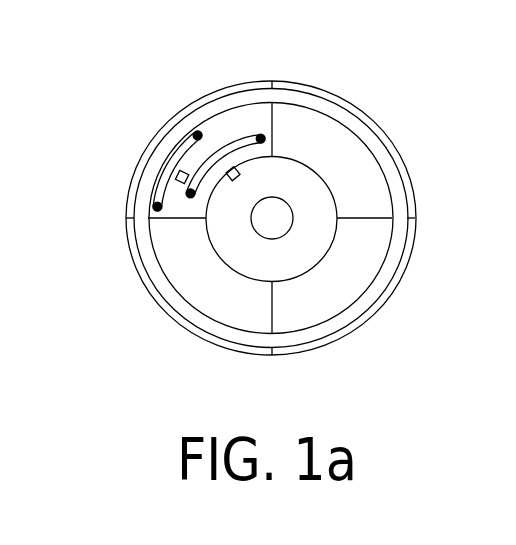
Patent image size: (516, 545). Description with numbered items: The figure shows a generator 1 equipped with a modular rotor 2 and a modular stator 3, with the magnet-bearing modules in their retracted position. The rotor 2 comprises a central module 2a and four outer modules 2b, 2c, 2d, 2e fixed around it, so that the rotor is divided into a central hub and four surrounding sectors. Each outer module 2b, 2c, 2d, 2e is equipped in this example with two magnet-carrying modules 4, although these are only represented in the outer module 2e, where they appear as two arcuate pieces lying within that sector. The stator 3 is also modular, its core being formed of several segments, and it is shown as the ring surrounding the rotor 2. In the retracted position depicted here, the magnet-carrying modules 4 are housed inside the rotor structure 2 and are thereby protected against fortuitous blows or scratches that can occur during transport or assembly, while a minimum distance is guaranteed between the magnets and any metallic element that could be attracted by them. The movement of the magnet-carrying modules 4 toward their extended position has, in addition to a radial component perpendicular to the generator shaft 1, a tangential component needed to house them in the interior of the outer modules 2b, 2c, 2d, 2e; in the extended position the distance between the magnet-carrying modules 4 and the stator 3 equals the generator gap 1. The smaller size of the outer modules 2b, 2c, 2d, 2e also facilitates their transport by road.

The generator 1 is at (130, 85).
The rotor 2 is at (315, 101).
The central module 2a is at (318, 225).
The outer module 2b is at (347, 165).
The outer module 2c is at (323, 287).
The outer module 2d is at (195, 272).
The outer module 2e is at (242, 127).
The stator 3 is at (376, 111).
The magnet-carrying module 4 is at (168, 185).